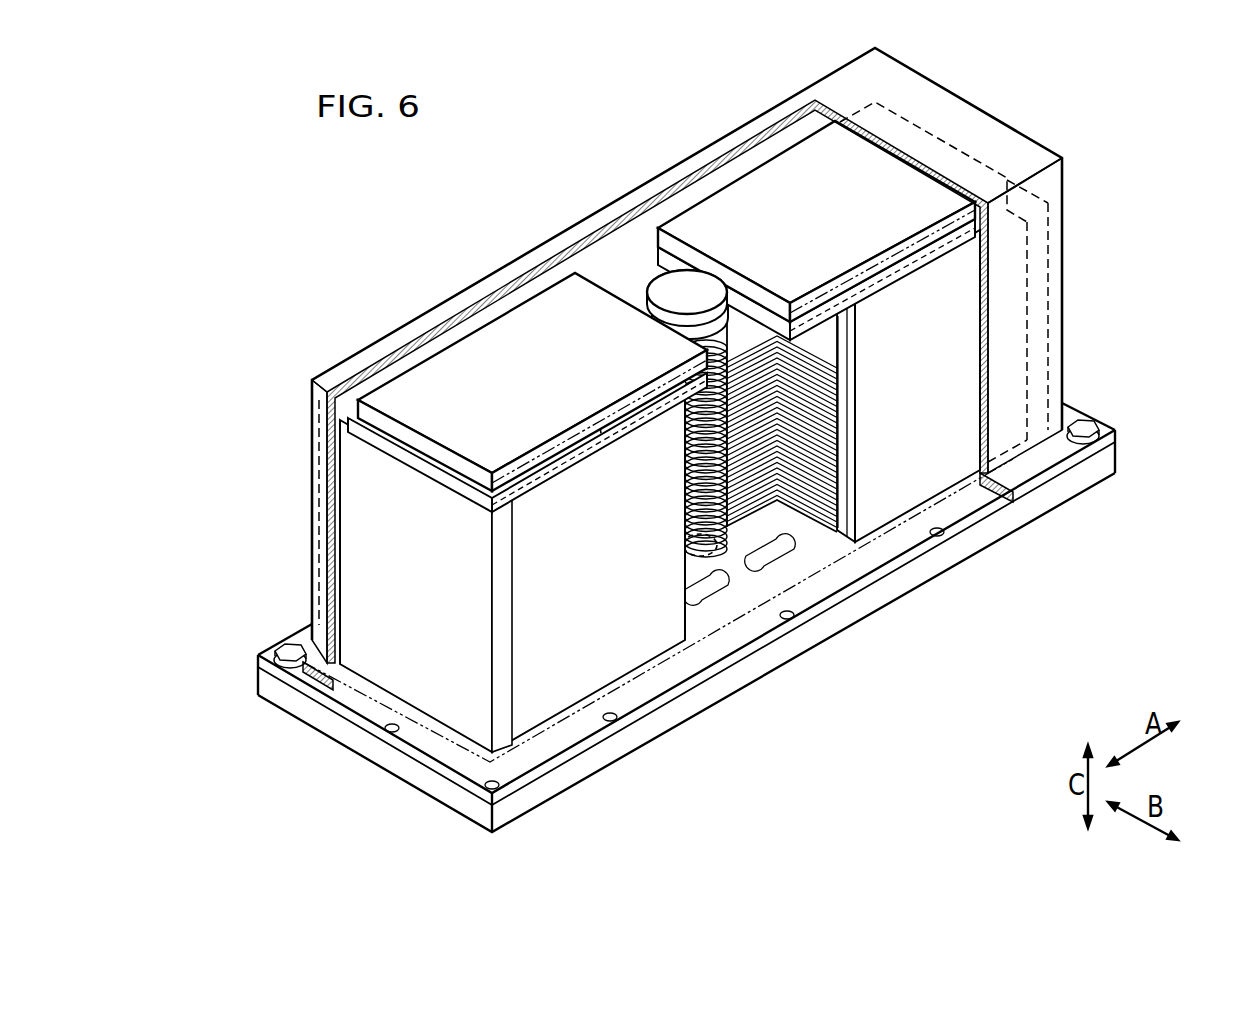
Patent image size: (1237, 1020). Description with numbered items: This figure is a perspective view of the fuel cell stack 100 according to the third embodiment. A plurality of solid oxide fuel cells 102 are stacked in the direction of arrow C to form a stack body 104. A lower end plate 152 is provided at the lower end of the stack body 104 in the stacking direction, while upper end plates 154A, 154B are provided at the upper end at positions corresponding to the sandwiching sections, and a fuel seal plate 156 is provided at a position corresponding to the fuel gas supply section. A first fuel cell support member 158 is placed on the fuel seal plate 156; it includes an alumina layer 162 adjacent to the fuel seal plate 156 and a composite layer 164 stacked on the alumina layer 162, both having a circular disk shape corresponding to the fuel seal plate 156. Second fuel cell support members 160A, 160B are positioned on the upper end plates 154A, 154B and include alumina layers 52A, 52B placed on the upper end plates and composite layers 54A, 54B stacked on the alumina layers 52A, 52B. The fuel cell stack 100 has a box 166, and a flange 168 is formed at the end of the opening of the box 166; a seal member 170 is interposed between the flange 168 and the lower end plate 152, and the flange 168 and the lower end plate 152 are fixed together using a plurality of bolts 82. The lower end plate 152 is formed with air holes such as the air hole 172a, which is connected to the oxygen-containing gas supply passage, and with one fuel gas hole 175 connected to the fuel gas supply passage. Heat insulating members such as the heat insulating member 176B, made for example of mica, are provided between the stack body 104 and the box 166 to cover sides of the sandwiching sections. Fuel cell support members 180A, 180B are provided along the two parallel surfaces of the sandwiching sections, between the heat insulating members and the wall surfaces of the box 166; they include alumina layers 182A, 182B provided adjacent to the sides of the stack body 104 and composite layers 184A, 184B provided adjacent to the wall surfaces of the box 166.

The fuel cell stack 100 is at (372, 252).
The lower end plate 152 is at (652, 742).
The seal member 170 is at (997, 512).
The air hole 172a is at (717, 593).
The flange 168 is at (1047, 460).
The bolt 82 is at (1083, 426).
The fuel cell support member 180A is at (899, 480).
The alumina layer 182A is at (832, 508).
The composite layer 184A is at (870, 505).
The stack body 104 is at (846, 416).
The solid oxide fuel cell 102 is at (835, 360).
The upper end plate 154A is at (830, 320).
The second fuel cell support member 160A is at (816, 211).
The alumina layer 52A is at (905, 268).
The composite layer 54A is at (868, 265).
The fuel seal plate 156 is at (752, 330).
The fuel gas hole 175 is at (683, 544).
The first fuel cell support member 158 is at (648, 264).
The alumina layer 162 is at (697, 333).
The composite layer 164 is at (660, 295).
The second fuel cell support member 160B is at (460, 481).
The fuel cell support member 180B is at (456, 574).
The composite layer 184B is at (535, 629).
The heat insulating member 176B is at (358, 563).
The alumina layer 182B is at (530, 510).
The upper end plate 154B is at (597, 398).
The alumina layer 52B is at (412, 457).
The composite layer 54B is at (405, 428).
The box 166 is at (930, 94).